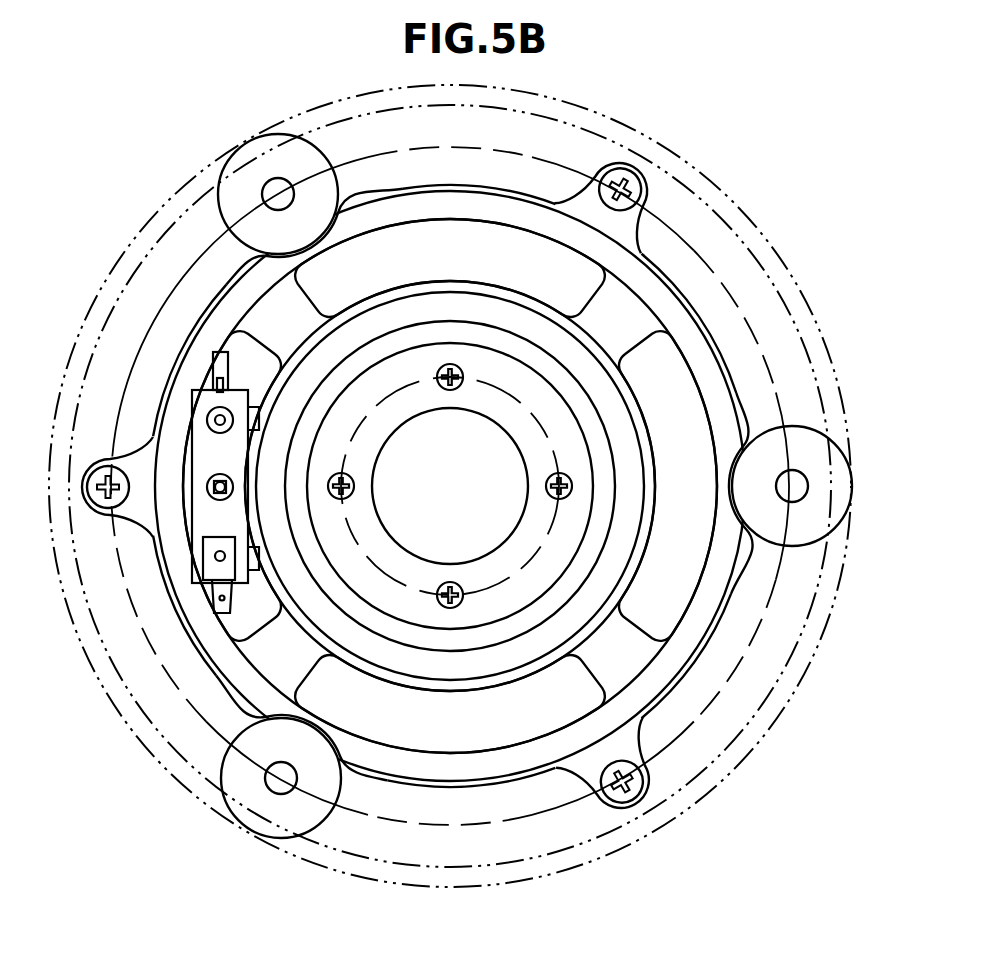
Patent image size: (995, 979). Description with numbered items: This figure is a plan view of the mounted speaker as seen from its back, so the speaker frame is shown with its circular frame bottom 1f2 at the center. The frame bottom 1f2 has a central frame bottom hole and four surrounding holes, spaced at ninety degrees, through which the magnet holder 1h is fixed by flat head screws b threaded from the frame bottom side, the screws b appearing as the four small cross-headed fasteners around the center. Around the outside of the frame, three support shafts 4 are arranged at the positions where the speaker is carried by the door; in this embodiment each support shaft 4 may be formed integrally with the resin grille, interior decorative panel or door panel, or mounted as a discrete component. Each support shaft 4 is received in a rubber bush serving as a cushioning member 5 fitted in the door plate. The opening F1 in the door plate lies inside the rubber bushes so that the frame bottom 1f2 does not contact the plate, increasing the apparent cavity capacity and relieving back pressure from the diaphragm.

The support shaft 4 is at (263, 190).
The cushioning member 5 is at (322, 224).
The opening F1 is at (275, 254).
The flat head screw b is at (76, 452).
The magnet holder 1h is at (513, 527).
The frame bottom 1f2 is at (360, 550).